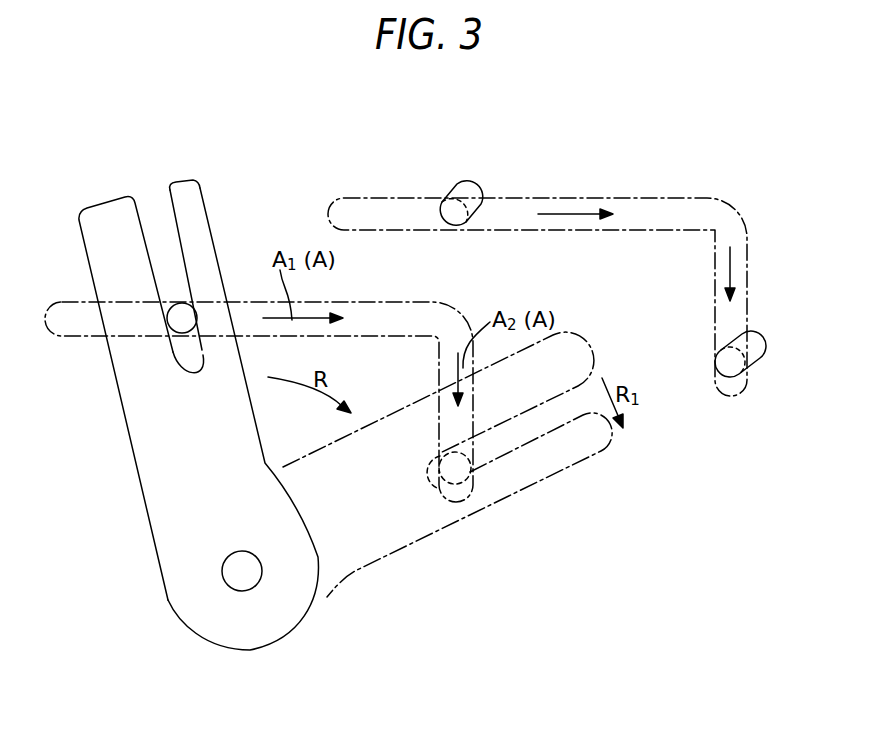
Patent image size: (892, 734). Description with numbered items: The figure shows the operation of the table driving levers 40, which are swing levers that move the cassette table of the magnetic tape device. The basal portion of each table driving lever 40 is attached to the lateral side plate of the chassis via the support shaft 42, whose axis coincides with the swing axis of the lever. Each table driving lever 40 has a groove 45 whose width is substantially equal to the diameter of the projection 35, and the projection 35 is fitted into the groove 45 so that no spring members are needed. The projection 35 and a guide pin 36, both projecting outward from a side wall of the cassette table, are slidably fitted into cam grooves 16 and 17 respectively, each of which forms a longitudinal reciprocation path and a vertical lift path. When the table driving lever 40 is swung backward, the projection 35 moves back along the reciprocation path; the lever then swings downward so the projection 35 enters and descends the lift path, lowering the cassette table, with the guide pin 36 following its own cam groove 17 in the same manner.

The cam groove 16 is at (367, 300).
The cam groove 17 is at (653, 198).
The projection 35 is at (176, 318).
The guide pin 36 is at (457, 220).
The table driving lever 40 is at (143, 497).
The support shaft 42 is at (250, 583).
The groove 45 is at (172, 220).